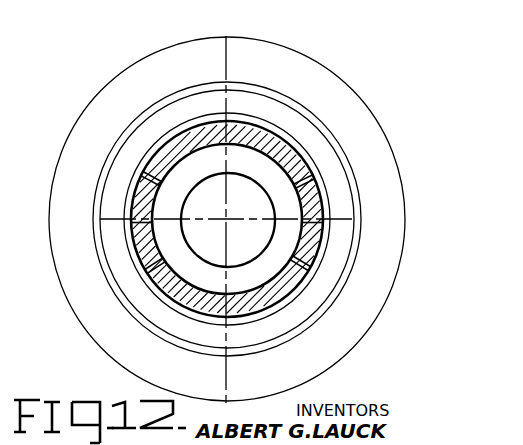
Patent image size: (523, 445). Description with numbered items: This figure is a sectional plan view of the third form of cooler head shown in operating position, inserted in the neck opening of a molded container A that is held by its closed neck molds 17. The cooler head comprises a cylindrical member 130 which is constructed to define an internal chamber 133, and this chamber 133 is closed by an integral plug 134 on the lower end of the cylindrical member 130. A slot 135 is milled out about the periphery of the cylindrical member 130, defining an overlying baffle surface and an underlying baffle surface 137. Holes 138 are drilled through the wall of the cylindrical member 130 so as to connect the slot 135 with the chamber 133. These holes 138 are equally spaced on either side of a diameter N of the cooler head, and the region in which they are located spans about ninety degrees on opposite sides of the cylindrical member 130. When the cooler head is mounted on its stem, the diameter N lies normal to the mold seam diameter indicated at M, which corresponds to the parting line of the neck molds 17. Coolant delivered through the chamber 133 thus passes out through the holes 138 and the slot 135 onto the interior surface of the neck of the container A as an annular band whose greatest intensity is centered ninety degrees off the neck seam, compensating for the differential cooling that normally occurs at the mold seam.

The neck molds 17 is at (136, 48).
The container A is at (287, 100).
The cylindrical member 130 is at (313, 183).
The chamber 133 is at (203, 184).
The plug 134 is at (217, 212).
The slot 135 is at (199, 124).
The underlying baffle surface 137 is at (290, 121).
The holes 138 is at (142, 173).
The diameter N is at (283, 216).
The mold seam diameter M is at (232, 282).